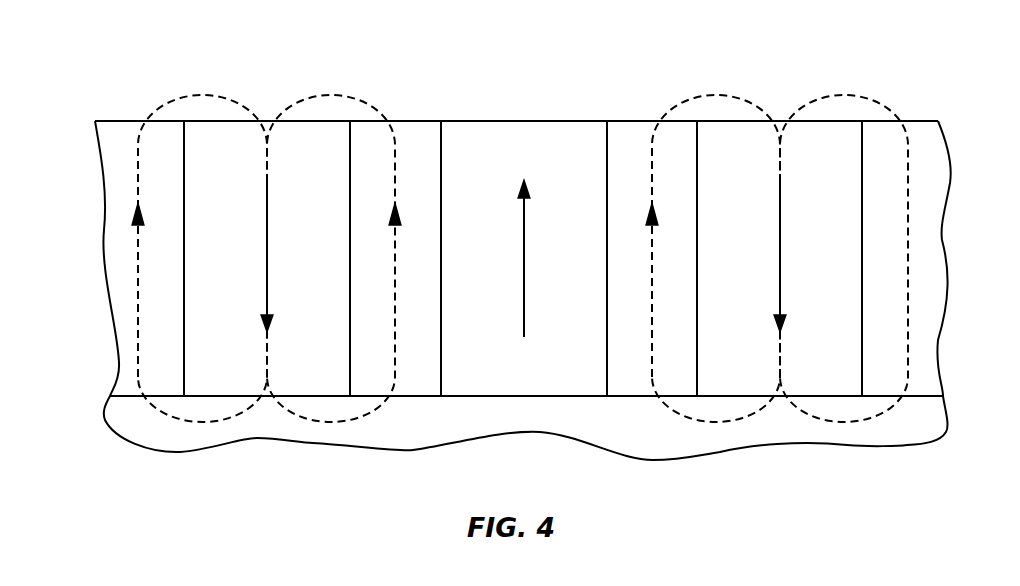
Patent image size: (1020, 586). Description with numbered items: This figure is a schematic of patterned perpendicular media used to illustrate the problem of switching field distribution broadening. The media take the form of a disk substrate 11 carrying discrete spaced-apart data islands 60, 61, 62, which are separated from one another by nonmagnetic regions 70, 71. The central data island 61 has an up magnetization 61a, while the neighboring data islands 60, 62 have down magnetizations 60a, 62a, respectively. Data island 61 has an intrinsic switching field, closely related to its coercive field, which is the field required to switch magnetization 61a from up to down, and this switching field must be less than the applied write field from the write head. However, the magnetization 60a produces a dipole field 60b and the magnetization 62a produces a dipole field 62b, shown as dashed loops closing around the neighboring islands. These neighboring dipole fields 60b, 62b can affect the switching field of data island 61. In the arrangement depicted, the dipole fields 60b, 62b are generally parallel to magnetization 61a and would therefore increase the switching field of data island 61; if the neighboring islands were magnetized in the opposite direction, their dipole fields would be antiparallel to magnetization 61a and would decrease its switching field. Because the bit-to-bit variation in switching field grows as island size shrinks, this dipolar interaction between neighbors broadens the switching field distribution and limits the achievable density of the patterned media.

The disk substrate 11 is at (120, 420).
The data island 60 is at (307, 137).
The down magnetization 60a is at (267, 250).
The dipole field 60b is at (395, 238).
The data island 61 is at (490, 137).
The up magnetization 61a is at (524, 250).
The data island 62 is at (815, 137).
The down magnetization 62a is at (780, 250).
The dipole field 62b is at (652, 237).
The nonmagnetic region 70 is at (408, 377).
The nonmagnetic region 71 is at (630, 377).